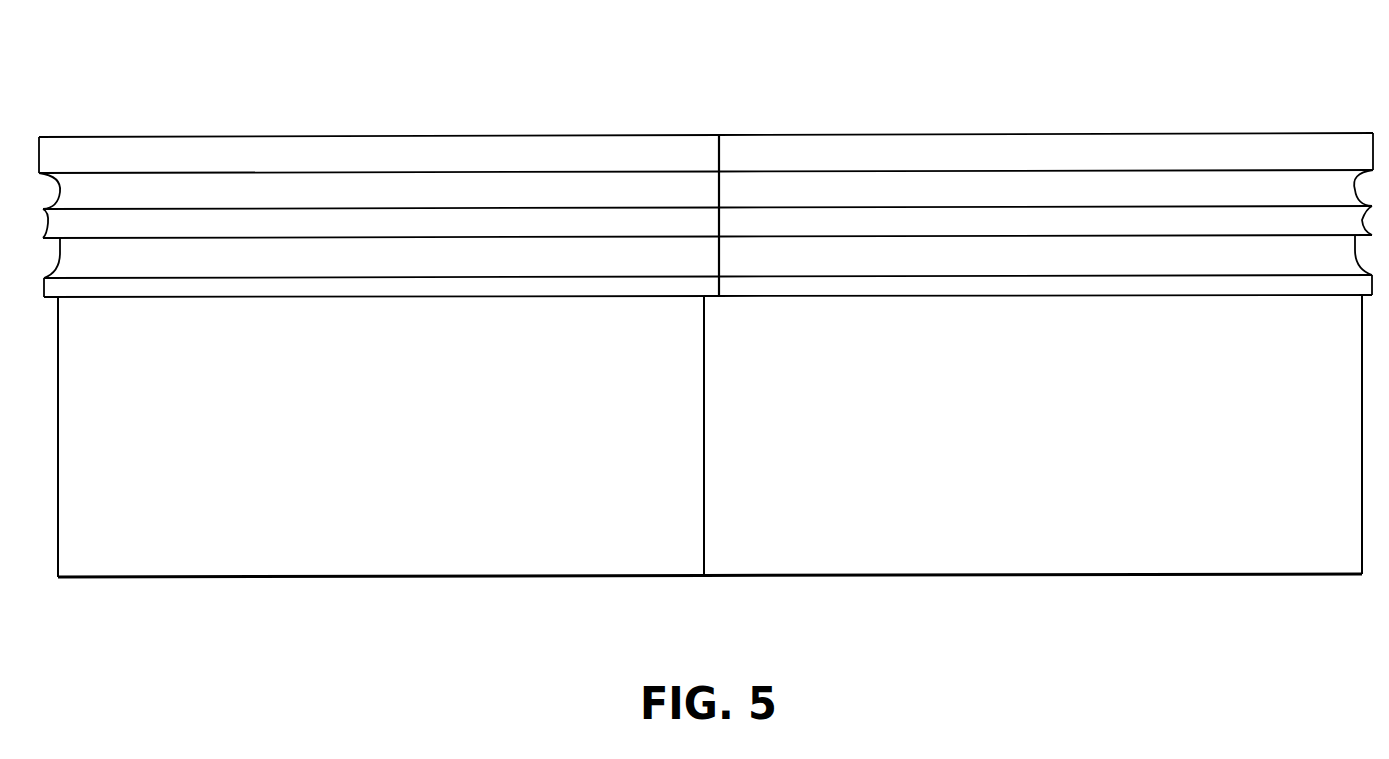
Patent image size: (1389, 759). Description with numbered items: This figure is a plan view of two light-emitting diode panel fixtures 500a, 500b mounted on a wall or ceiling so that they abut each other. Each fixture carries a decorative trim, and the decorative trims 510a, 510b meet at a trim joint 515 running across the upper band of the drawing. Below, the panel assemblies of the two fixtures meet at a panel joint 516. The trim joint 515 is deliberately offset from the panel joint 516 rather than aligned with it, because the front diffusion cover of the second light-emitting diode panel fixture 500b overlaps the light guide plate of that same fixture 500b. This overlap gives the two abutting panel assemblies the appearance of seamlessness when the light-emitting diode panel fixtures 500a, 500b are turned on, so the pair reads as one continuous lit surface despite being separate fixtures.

The decorative trim 510a is at (283, 158).
The decorative trim 510b is at (1043, 158).
The trim joint 515 is at (720, 160).
The panel joint 516 is at (705, 532).
The light-emitting diode panel fixture 500a is at (360, 517).
The light-emitting diode panel fixture 500b is at (1043, 530).